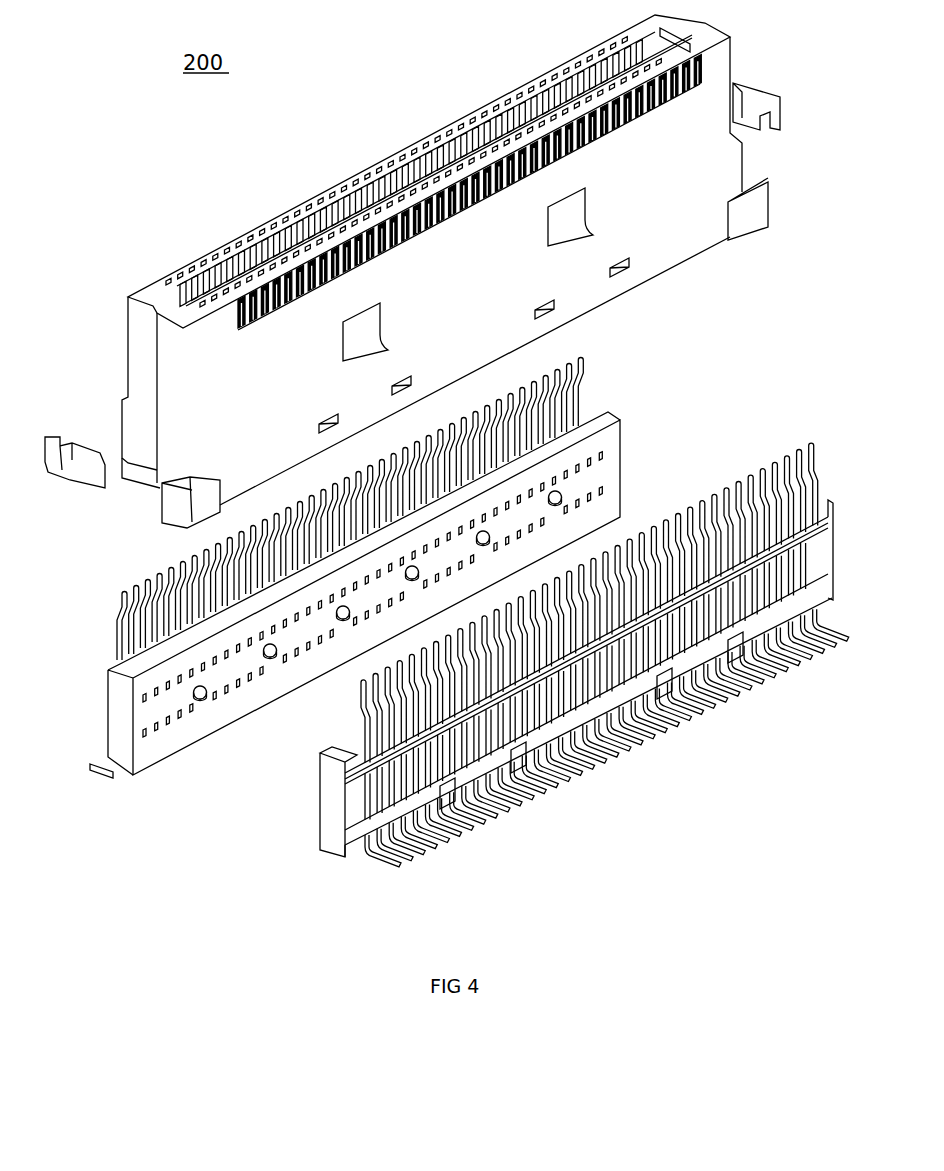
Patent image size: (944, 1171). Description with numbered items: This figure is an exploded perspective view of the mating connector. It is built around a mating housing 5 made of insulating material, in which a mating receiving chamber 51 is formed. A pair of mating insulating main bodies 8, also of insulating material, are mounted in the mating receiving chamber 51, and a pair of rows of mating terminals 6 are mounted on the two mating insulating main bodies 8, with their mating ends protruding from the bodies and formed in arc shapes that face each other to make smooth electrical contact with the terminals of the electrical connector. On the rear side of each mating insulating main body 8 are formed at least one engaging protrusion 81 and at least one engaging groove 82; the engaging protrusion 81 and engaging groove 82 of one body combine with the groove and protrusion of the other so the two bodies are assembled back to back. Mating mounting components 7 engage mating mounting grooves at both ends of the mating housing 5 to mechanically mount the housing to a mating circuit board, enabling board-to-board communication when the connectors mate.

The mating housing 5 is at (433, 271).
The mating receiving chamber 51 is at (217, 283).
The mating mounting component 7 is at (766, 106).
The mating insulating main body 8 is at (430, 624).
The engaging protrusion 81 is at (207, 690).
The engaging groove 82 is at (560, 490).
The mating terminals 6 is at (771, 676).